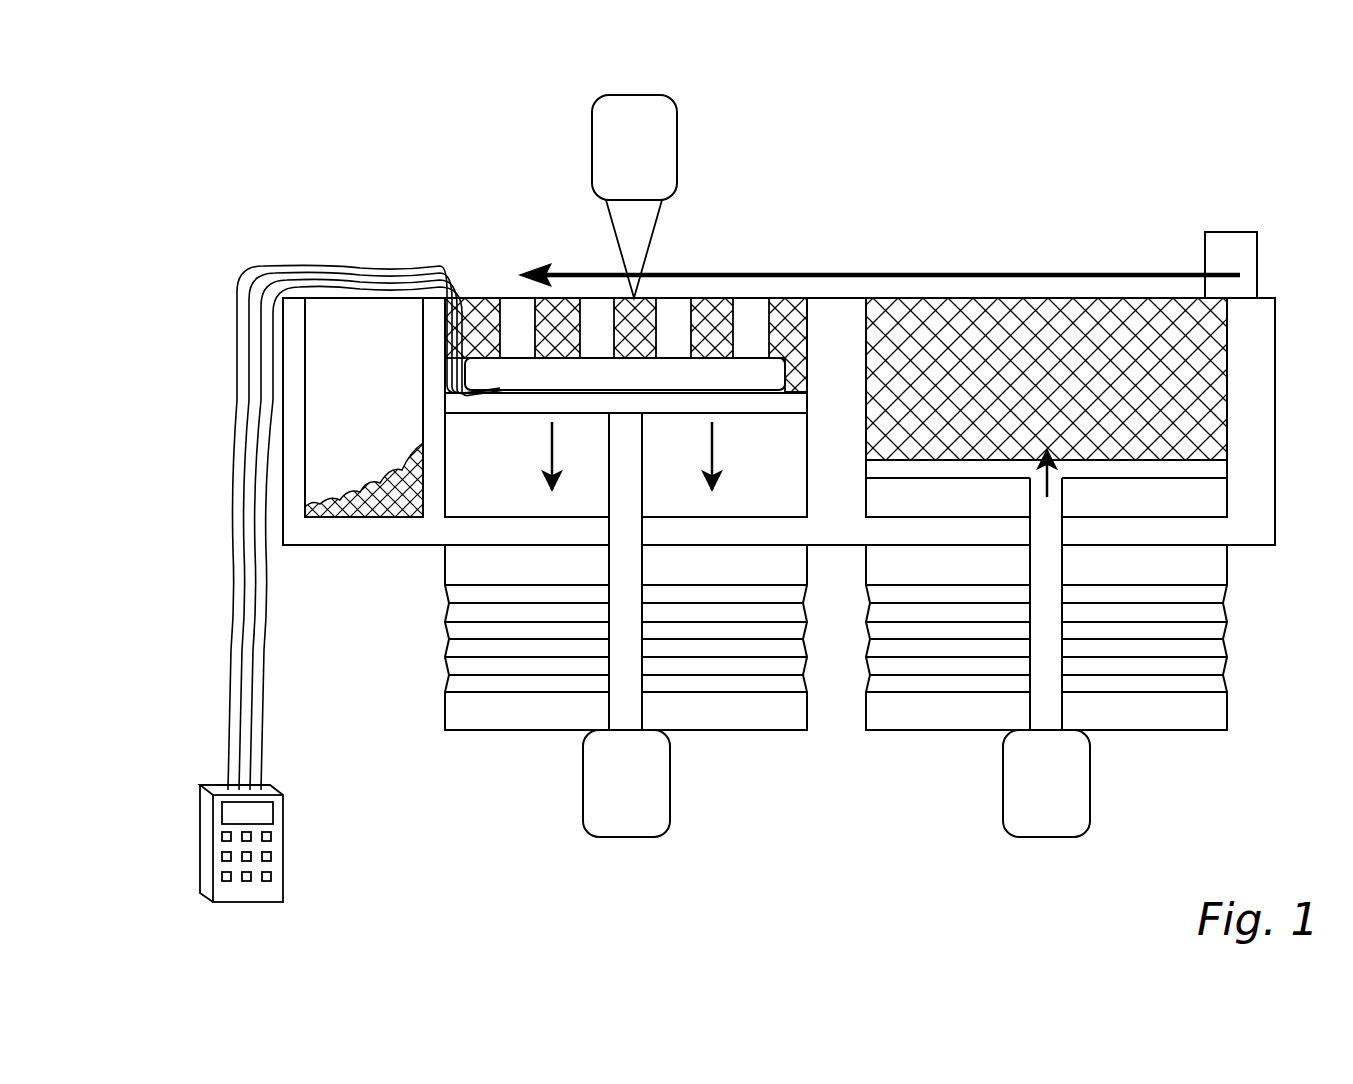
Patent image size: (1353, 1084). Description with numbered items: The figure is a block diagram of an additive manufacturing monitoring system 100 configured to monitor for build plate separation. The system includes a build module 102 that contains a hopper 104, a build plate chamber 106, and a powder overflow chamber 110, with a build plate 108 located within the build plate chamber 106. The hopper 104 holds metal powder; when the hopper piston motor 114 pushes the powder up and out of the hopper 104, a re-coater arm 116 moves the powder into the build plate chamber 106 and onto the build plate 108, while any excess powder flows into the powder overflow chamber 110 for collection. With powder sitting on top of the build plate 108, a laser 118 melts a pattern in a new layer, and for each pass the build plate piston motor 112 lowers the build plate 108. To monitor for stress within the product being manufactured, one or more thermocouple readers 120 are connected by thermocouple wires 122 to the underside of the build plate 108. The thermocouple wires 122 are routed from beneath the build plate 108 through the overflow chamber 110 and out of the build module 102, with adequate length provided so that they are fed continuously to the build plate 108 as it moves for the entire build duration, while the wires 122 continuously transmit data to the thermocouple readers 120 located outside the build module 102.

The additive manufacturing monitoring system 100 is at (236, 138).
The build module 102 is at (371, 558).
The hopper 104 is at (1074, 296).
The build plate chamber 106 is at (791, 303).
The build plate 108 is at (545, 344).
The powder overflow chamber 110 is at (355, 334).
The build plate piston motor 112 is at (628, 848).
The hopper piston motor 114 is at (1048, 850).
The re-coater arm 116 is at (1236, 222).
The laser 118 is at (656, 146).
The thermocouple readers 120 is at (176, 828).
The thermocouple wires 122 is at (216, 443).